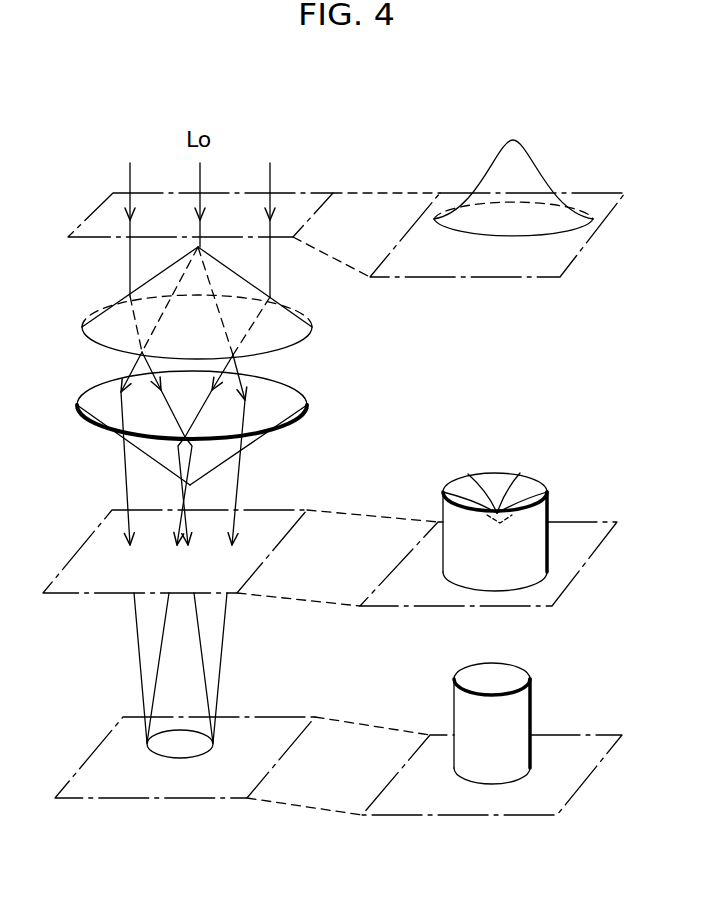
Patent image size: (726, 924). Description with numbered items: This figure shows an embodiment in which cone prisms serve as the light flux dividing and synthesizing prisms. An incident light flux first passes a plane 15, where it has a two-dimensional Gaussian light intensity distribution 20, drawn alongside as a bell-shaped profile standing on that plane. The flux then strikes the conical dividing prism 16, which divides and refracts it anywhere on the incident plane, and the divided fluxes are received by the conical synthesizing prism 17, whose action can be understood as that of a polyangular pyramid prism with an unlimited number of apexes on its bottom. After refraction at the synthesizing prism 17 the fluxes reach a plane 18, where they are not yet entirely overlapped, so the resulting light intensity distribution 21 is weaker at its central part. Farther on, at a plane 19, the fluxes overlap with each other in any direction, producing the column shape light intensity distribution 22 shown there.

The plane 15 is at (307, 213).
The conical dividing prism 16 is at (282, 332).
The conical synthesizing prism 17 is at (300, 395).
The plane 18 is at (263, 538).
The plane 19 is at (273, 745).
The two-dimensional Gaussian light intensity distribution 20 is at (533, 170).
The light intensity distribution with weaker central intensity 21 is at (548, 507).
The column shape light intensity distribution 22 is at (533, 700).